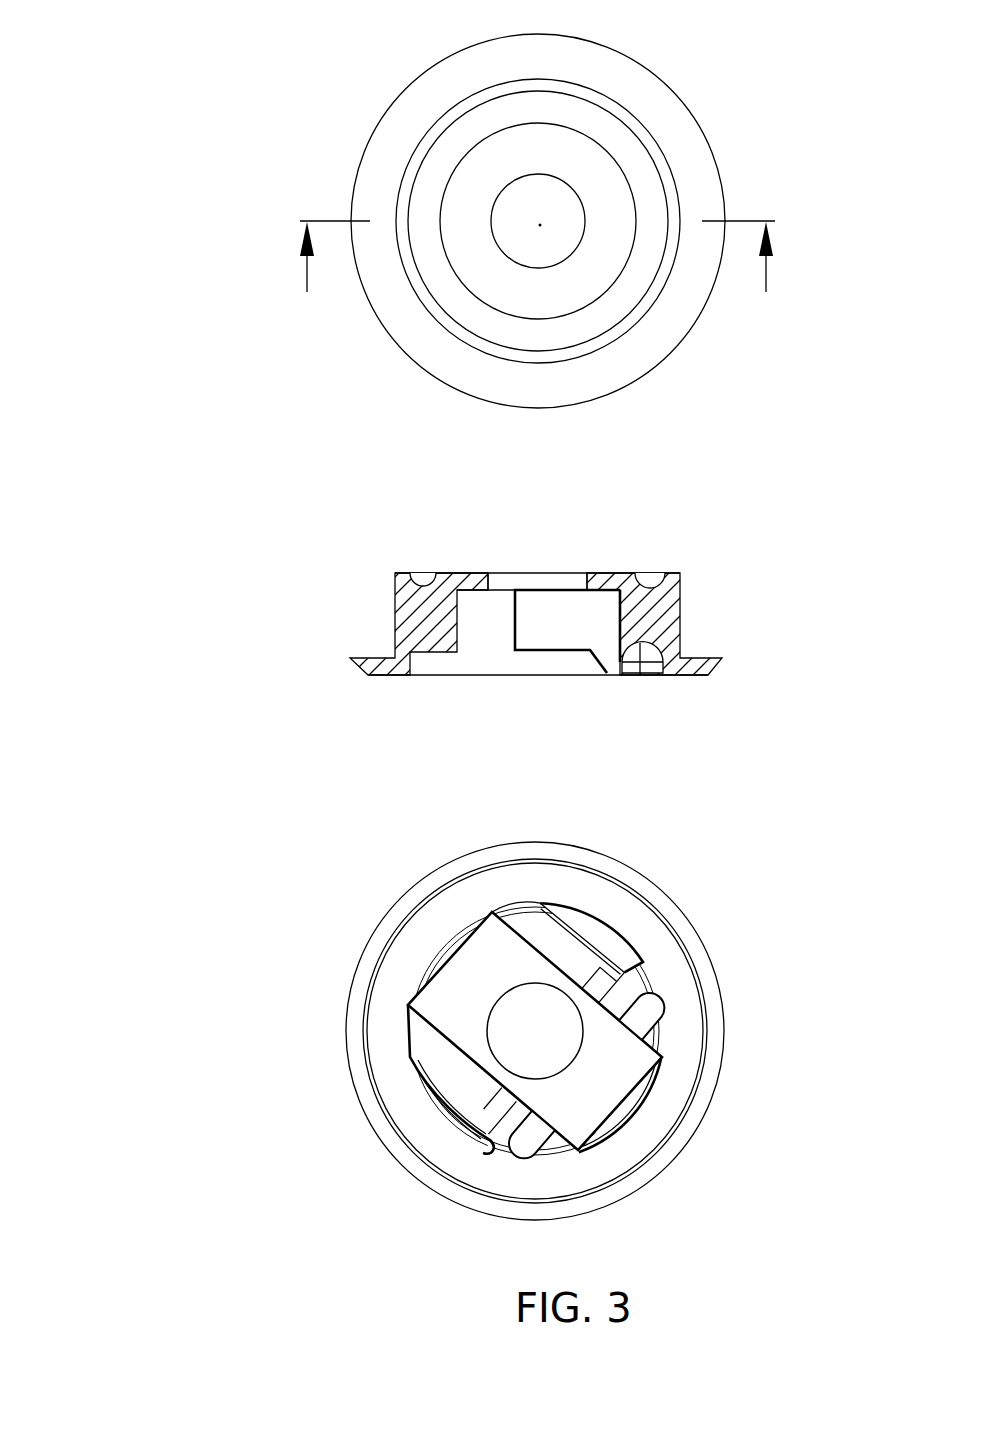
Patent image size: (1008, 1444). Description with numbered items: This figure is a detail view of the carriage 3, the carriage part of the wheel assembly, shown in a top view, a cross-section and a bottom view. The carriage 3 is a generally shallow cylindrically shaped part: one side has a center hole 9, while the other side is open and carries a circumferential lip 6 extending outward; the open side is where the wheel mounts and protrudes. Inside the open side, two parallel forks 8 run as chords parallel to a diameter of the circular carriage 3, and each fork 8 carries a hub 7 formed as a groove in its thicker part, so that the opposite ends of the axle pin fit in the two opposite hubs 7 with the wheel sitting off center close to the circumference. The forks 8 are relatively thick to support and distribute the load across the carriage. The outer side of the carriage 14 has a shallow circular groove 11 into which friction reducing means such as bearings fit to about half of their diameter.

The carriage 3 is at (162, 430).
The circumferential lip 6 is at (580, 387).
The hub 7 is at (643, 662).
The fork 8 is at (557, 625).
The center hole 9 is at (540, 225).
The shallow circular groove 11 is at (647, 178).
The outer side of the carriage 14 is at (468, 215).